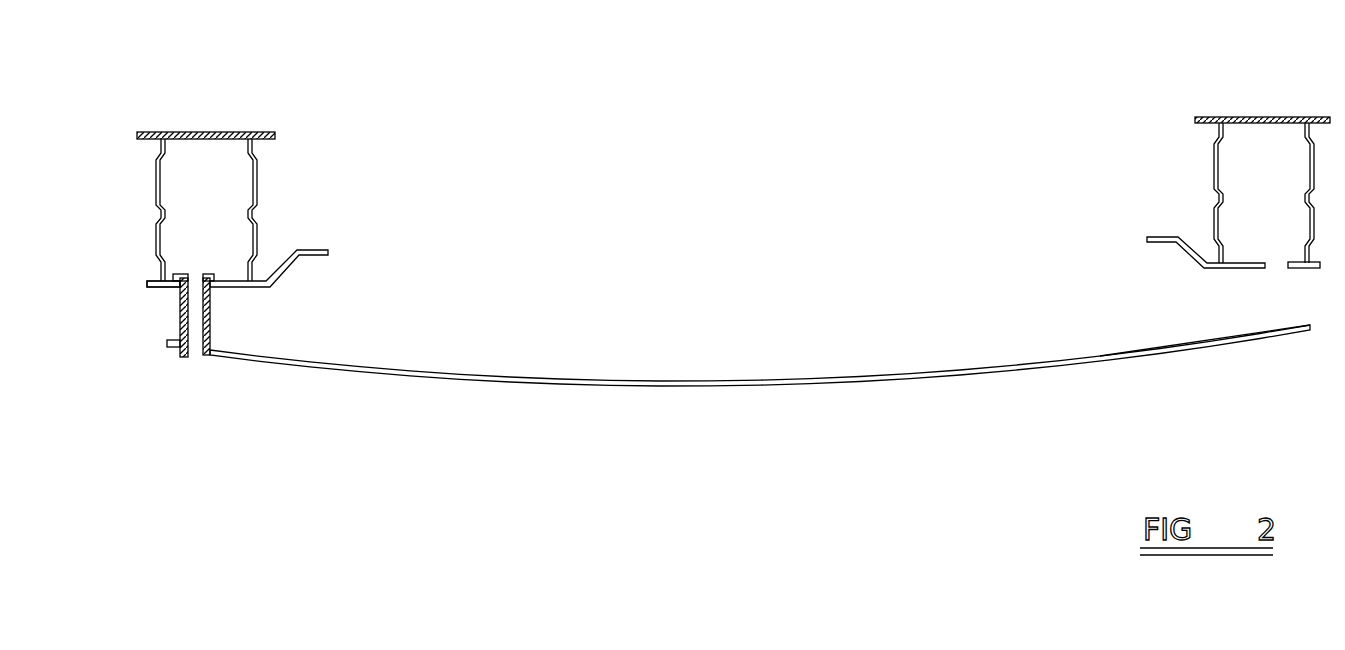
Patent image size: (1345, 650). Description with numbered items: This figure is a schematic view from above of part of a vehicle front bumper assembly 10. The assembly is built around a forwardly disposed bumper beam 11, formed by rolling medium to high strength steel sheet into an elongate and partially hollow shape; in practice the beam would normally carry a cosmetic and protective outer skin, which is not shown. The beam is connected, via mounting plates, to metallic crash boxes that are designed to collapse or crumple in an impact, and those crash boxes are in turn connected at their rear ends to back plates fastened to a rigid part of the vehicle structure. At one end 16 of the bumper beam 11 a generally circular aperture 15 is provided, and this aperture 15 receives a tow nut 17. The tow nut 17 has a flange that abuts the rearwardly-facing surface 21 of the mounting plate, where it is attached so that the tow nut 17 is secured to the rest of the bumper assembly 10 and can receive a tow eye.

The vehicle front bumper assembly 10 is at (1187, 357).
The bumper beam 11 is at (542, 384).
The aperture 15 is at (196, 357).
The end of the bumper beam 16 is at (169, 349).
The tow nut 17 is at (178, 320).
The rearwardly-facing surface of the mounting plate 21 is at (231, 281).